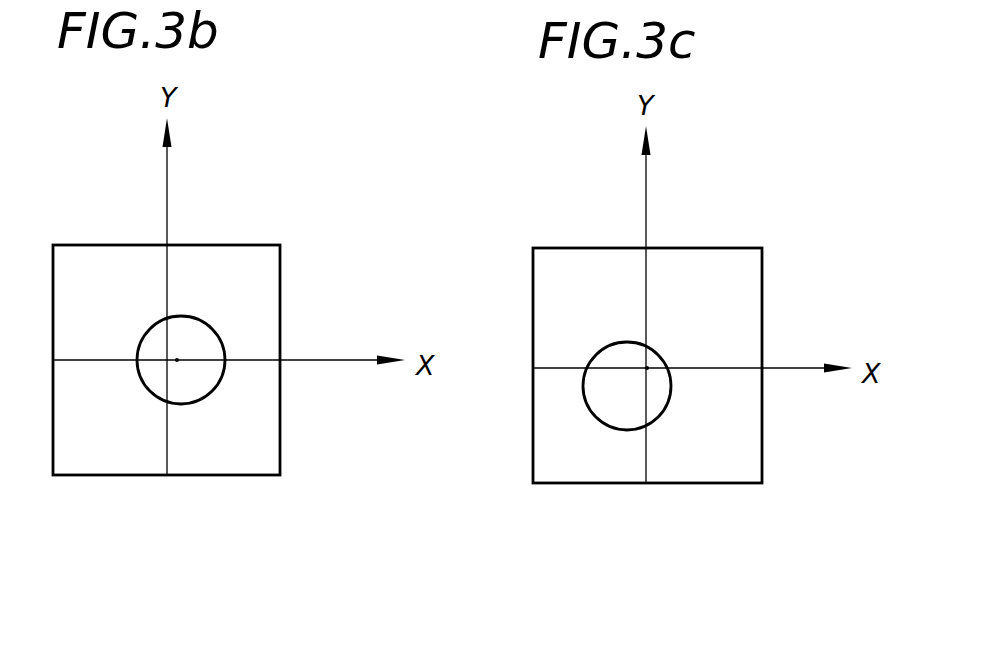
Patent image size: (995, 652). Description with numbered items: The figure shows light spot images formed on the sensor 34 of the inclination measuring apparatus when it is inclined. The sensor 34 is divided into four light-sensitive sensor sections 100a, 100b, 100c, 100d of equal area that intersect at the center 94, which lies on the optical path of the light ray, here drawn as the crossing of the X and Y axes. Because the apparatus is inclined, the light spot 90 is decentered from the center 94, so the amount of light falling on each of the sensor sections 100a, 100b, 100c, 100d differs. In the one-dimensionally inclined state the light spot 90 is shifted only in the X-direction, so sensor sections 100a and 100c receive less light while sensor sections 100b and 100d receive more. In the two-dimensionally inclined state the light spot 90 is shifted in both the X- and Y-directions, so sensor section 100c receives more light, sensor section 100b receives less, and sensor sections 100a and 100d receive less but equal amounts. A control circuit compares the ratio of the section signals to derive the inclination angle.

In FIG. 3b, the sensor 34 is at (270, 190).
In FIG. 3c, the sensor 34 is at (706, 183).
In FIG. 3b, the light spot 90 is at (226, 350).
In FIG. 3c, the light spot 90 is at (587, 405).
In FIG. 3b, the center 94 is at (175, 361).
In FIG. 3c, the center 94 is at (647, 368).
In FIG. 3b, the sensor section 100a is at (103, 260).
In FIG. 3c, the sensor section 100a is at (553, 290).
In FIG. 3b, the sensor section 100b is at (212, 260).
In FIG. 3c, the sensor section 100b is at (738, 333).
In FIG. 3b, the sensor section 100c is at (115, 463).
In FIG. 3c, the sensor section 100c is at (598, 465).
In FIG. 3b, the sensor section 100d is at (232, 465).
In FIG. 3c, the sensor section 100d is at (738, 433).